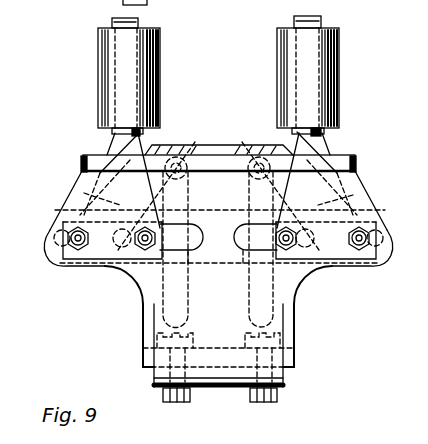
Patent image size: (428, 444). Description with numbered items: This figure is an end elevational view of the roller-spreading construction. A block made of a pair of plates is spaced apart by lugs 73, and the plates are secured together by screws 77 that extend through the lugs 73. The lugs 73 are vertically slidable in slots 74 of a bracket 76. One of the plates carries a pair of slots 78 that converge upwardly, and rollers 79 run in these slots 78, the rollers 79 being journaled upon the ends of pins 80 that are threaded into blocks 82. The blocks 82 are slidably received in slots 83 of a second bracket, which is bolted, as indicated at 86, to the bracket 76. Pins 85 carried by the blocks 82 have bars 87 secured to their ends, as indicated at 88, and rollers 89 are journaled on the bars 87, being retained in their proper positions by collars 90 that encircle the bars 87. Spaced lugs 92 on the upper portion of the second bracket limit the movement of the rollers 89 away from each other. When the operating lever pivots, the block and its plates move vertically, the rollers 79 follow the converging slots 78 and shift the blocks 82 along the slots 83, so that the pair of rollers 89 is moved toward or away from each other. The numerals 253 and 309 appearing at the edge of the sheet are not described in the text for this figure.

The element of adjacent figure 253 is at (59, 7).
The element of adjacent figure 309 is at (119, 2).
The lugs 73 is at (194, 149).
The slots 74 is at (165, 310).
The bracket 76 is at (296, 335).
The screws 77 is at (238, 141).
The slots 78 is at (84, 193).
The rollers 79 is at (98, 266).
The pins 80 is at (133, 265).
The blocks 82 is at (74, 266).
The slots 83 is at (247, 262).
The pins 85 is at (250, 220).
The bolts 86 is at (251, 403).
The bars 87 is at (112, 147).
The securing means 88 is at (62, 231).
The rollers 89 is at (161, 93).
The collars 90 is at (283, 25).
The spaced lugs 92 is at (84, 162).